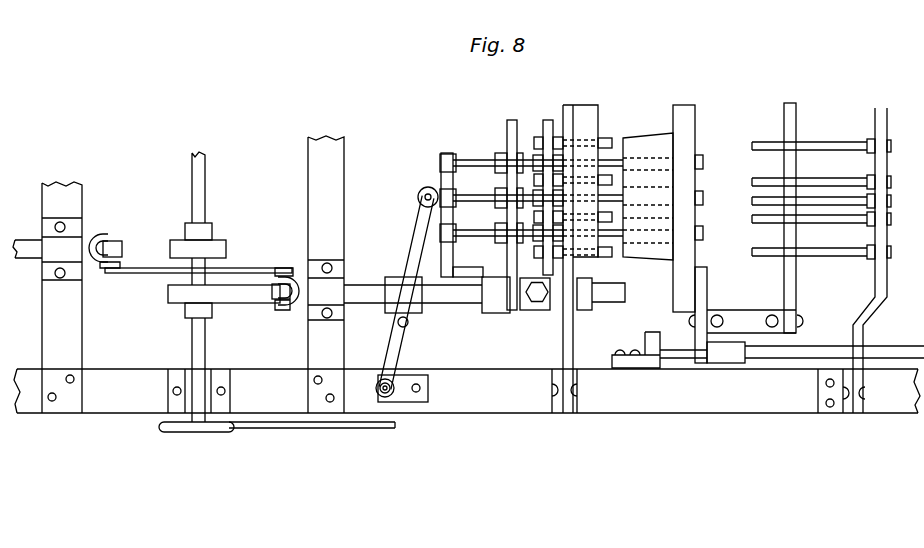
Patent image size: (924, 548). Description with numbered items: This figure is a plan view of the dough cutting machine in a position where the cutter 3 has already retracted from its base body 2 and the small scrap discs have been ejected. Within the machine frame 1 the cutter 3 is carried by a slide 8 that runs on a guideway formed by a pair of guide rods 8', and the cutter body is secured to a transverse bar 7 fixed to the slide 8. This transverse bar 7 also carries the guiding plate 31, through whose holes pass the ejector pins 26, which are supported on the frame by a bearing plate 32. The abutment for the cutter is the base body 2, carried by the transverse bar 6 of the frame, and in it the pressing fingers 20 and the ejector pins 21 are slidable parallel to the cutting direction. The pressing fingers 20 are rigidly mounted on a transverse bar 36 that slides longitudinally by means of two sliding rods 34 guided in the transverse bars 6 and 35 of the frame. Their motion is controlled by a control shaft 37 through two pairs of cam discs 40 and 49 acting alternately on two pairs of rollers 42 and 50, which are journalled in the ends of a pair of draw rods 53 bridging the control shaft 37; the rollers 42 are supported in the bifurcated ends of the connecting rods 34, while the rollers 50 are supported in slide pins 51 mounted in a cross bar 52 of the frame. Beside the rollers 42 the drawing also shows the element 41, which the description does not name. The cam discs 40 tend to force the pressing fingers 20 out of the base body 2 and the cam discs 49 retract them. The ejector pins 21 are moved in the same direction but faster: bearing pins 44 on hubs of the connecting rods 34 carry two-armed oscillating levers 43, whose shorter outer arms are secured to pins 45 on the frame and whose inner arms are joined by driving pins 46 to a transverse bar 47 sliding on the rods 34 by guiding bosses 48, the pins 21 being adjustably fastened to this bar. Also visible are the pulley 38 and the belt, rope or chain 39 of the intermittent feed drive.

The machine frame 1 is at (455, 410).
The base body 2 is at (586, 114).
The cutter 3 is at (653, 137).
The transverse bar 6 is at (574, 349).
The transverse bar 7 is at (687, 301).
The slide 8 is at (678, 368).
The guide rods 8' is at (834, 339).
The pressing fingers 20 is at (606, 178).
The ejector pins 21 is at (701, 233).
The ejector pins 26 is at (812, 199).
The guiding plate 31 is at (790, 114).
The bearing plate 32 is at (880, 116).
The sliding rods 34 is at (606, 301).
The transverse bar 35 is at (321, 415).
The transverse bar 36 is at (546, 131).
The control shaft 37 is at (206, 347).
The pulley 38 is at (180, 433).
The belt, rope or chain 39 is at (295, 430).
The cam discs 40 is at (172, 304).
The block 41 is at (284, 282).
The rollers 42 is at (292, 310).
The two-armed oscillating levers 43 is at (417, 243).
The bearing pins 44 is at (410, 322).
The pins 45 is at (395, 400).
The driving pins 46 is at (433, 192).
The transverse bar 47 is at (507, 136).
The guiding bosses 48 is at (500, 312).
The cam discs 49 is at (215, 251).
The rollers 50 is at (122, 249).
The slide pins 51 is at (88, 240).
The cross bar 52 is at (70, 200).
The draw rods 53 is at (150, 276).